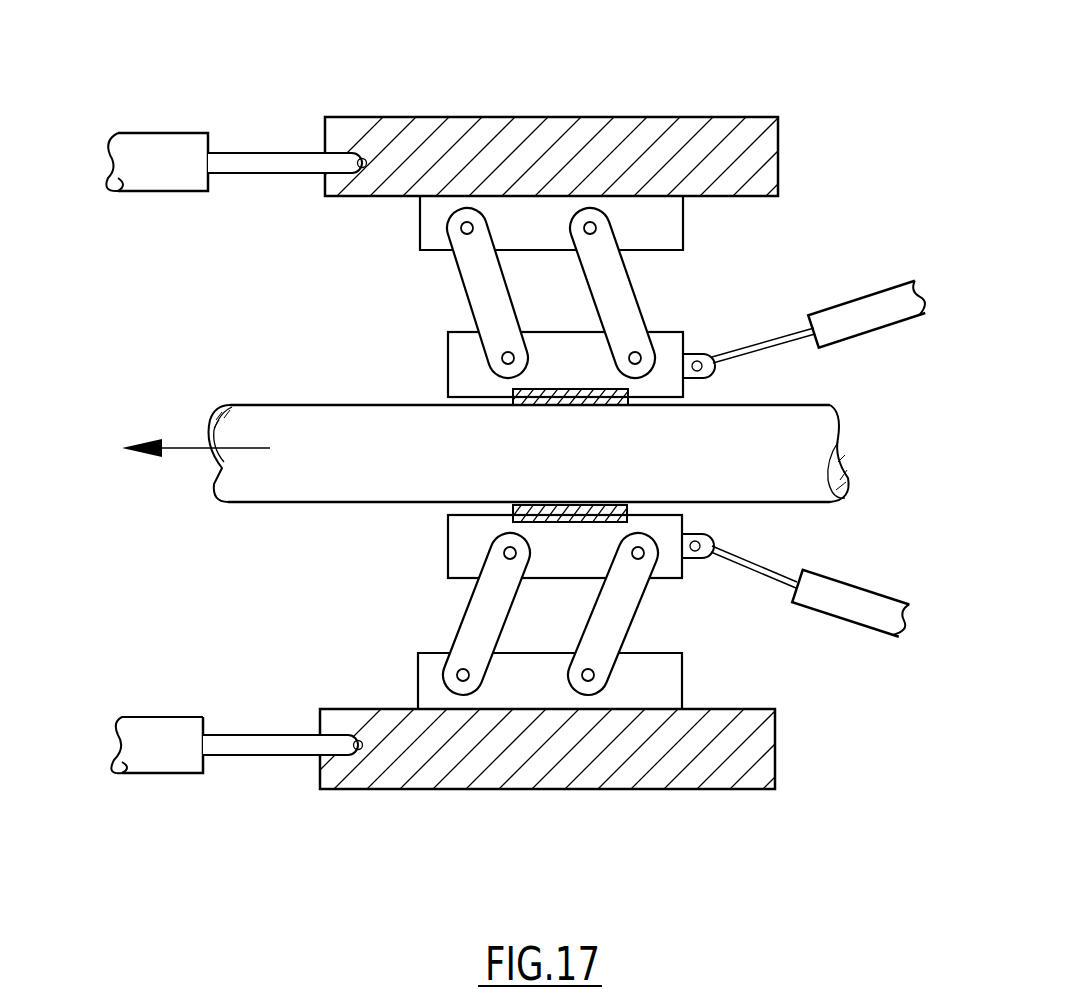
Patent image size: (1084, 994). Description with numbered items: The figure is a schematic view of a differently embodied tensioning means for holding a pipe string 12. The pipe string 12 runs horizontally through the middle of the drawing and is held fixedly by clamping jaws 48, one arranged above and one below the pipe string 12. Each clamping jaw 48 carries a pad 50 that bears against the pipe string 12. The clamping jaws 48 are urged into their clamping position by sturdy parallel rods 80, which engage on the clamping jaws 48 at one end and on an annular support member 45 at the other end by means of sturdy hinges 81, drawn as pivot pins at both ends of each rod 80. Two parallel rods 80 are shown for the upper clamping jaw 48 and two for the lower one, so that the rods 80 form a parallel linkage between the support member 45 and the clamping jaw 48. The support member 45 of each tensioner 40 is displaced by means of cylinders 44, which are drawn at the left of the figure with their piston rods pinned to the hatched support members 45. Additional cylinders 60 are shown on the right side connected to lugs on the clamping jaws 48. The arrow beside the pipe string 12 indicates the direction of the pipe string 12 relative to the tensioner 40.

The pipe string 12 is at (337, 420).
The tensioner 40 is at (389, 84).
The cylinders 44 is at (158, 142).
The annular support member 45 is at (522, 132).
The clamping jaws 48 is at (663, 338).
The clamping pad 50 is at (585, 387).
The hydraulic cylinder 60 is at (845, 315).
The parallel rods 80 is at (613, 290).
The hinges 81 is at (588, 228).